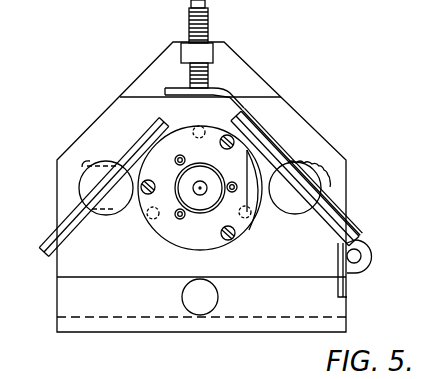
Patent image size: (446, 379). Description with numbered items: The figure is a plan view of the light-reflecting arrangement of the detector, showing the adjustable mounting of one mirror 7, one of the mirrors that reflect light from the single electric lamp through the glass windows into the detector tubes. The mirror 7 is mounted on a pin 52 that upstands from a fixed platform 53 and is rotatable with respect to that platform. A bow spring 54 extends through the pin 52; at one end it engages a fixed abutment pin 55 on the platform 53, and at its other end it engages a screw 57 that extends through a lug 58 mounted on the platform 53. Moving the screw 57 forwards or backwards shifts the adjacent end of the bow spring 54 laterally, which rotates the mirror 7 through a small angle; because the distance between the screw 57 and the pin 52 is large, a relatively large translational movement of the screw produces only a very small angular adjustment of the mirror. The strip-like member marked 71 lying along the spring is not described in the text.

The mirror 7 is at (50, 231).
The pin 52 is at (310, 170).
The fixed platform 53 is at (288, 118).
The bow spring 54 is at (270, 137).
The fixed abutment pin 55 is at (368, 253).
The screw 57 is at (209, 83).
The lug 58 is at (204, 52).
The strip 71 is at (347, 223).